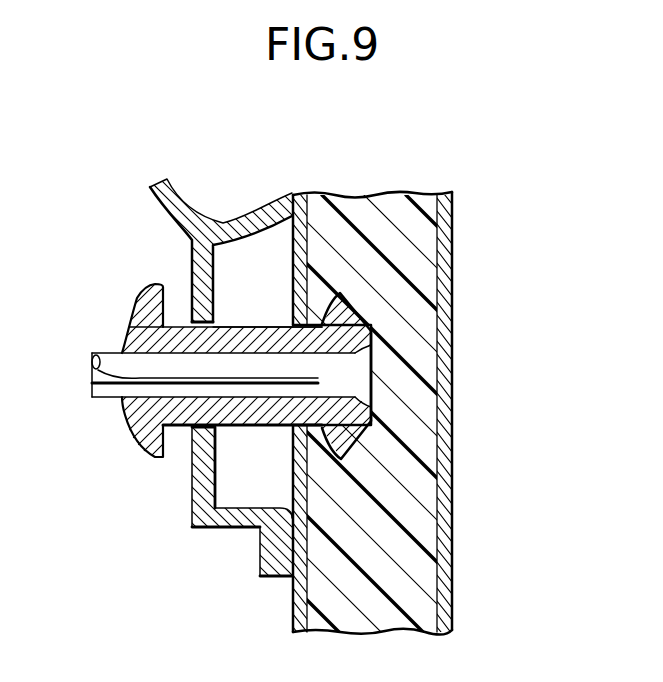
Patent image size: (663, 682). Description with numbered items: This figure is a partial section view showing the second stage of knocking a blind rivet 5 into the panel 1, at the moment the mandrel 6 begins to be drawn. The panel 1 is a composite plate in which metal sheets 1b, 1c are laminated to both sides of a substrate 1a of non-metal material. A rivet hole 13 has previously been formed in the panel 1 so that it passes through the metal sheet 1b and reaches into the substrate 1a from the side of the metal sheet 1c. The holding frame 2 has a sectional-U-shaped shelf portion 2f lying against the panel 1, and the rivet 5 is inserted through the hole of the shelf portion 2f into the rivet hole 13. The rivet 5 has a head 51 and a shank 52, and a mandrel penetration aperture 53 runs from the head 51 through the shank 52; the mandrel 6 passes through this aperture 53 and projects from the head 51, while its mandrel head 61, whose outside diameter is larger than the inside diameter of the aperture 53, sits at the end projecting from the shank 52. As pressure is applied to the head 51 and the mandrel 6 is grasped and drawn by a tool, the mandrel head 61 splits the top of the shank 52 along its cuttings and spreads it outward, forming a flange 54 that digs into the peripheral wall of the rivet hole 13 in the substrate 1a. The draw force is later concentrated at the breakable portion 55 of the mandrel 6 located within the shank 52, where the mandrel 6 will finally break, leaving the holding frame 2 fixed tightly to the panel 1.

The panel 1 is at (406, 368).
The substrate 1a is at (405, 518).
The metal sheet 1b is at (442, 466).
The metal sheet 1c is at (305, 592).
The holding frame 2 is at (205, 392).
The shelf portion 2f is at (192, 497).
The rivet 5 is at (141, 285).
The mandrel 6 is at (372, 330).
The rivet hole 13 is at (358, 357).
The head 51 is at (262, 398).
The shank 52 is at (242, 416).
The mandrel penetration aperture 53 is at (118, 342).
The flange 54 is at (292, 454).
The breakable portion 55 is at (90, 382).
The mandrel head 61 is at (377, 375).